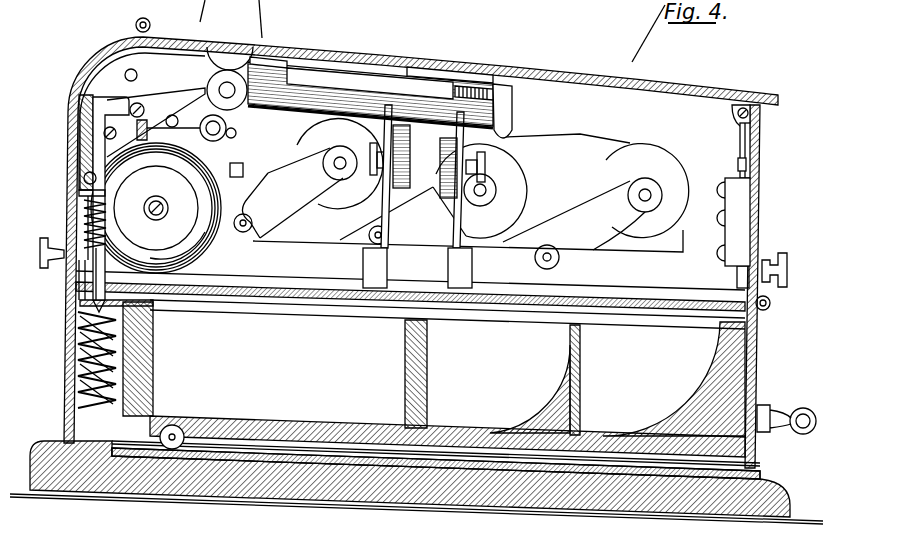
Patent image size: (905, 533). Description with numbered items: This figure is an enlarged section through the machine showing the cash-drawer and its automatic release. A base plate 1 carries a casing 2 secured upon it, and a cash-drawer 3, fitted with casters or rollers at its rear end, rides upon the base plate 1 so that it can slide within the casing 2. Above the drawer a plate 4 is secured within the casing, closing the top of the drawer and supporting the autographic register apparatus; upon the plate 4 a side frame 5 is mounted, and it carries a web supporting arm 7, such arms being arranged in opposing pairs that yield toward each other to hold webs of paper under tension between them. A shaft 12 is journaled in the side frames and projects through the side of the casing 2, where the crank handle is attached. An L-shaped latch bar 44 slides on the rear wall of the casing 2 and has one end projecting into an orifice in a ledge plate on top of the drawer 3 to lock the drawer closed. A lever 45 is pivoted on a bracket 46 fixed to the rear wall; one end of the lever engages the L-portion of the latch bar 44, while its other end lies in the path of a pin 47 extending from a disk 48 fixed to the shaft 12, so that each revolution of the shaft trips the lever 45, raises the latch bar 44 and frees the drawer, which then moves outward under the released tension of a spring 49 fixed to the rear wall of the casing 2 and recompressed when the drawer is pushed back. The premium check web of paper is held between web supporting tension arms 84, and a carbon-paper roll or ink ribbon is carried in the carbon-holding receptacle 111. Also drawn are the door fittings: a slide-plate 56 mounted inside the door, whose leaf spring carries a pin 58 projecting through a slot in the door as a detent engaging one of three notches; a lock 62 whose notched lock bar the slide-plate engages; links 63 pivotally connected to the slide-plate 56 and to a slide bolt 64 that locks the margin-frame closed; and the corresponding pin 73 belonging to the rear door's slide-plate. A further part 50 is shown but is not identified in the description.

The base plate 1 is at (776, 486).
The casing 2 is at (66, 312).
The cash-drawer 3 is at (247, 416).
The plate 4 is at (508, 300).
The side frame 5 is at (563, 134).
The web supporting arm 7 is at (290, 202).
The shaft 12 is at (224, 88).
The L-shaped latch bar 44 is at (98, 148).
The lever 45 is at (158, 100).
The bracket 46 is at (104, 93).
The pin 47 is at (237, 131).
The disk 48 is at (227, 88).
The spring 49 is at (82, 380).
The upper spring 50 is at (88, 210).
The slide-plate 56 is at (748, 166).
The pin 58 is at (788, 268).
The lock 62 is at (745, 228).
The links 63 is at (750, 133).
The slide bolt 64 is at (745, 106).
The pin 73 is at (42, 252).
The web supporting tension arms 84 is at (453, 219).
The carbon-holding receptacle 111 is at (505, 118).